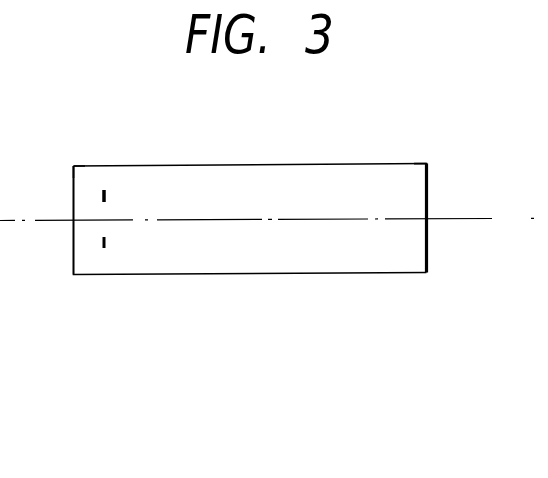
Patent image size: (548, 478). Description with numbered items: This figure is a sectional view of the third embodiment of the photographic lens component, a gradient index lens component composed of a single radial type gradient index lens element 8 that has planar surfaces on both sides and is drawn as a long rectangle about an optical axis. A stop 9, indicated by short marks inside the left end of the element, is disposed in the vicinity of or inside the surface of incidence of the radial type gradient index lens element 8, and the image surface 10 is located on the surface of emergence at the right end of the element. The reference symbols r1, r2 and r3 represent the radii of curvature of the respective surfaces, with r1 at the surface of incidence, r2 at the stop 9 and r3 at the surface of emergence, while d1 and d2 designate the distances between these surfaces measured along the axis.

The radial type gradient index lens element 8 is at (250, 275).
The stop 9 is at (105, 243).
The end face 10 is at (428, 253).
The radius of curvature r1 is at (73, 185).
The radius of curvature r2 is at (106, 195).
The radius of curvature r3 is at (426, 180).
The distance between surfaces d1 is at (88, 220).
The distance between surfaces d2 is at (217, 222).